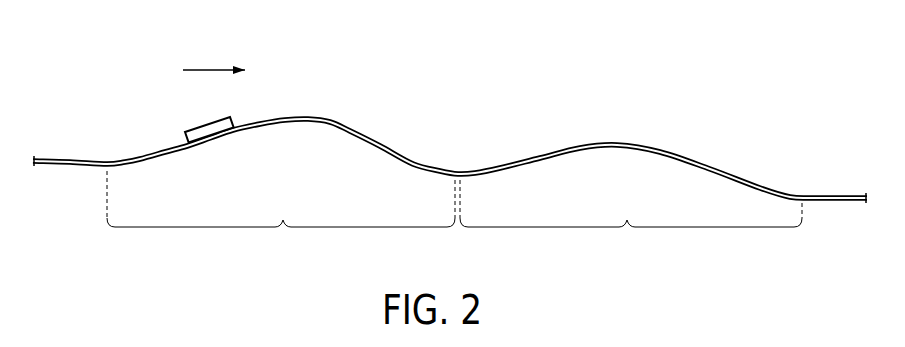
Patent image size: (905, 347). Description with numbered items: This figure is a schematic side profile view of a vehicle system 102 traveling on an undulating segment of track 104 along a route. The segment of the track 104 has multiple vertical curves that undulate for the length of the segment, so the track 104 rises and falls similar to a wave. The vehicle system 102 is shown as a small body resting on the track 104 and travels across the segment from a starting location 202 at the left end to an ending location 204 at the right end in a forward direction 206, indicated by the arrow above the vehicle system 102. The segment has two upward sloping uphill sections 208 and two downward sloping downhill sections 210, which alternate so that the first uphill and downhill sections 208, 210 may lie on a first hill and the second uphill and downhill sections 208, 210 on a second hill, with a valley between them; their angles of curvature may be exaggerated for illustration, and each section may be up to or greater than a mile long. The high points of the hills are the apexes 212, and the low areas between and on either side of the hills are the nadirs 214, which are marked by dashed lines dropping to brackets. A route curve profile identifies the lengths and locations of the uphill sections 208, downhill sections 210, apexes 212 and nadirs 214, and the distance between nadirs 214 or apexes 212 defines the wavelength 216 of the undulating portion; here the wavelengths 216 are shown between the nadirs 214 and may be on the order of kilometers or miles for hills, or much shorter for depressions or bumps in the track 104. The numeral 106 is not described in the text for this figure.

The vehicle system 102 is at (207, 126).
The track 104 is at (139, 153).
The surface of substrate 106 is at (73, 160).
The starting location 202 is at (45, 141).
The ending location 204 is at (849, 172).
The forward direction 206 is at (213, 65).
The uphill sections 208 is at (210, 148).
The downhill sections 210 is at (375, 153).
The apexes 212 is at (298, 118).
The nadirs 214 is at (101, 172).
The wavelength 216 is at (454, 217).